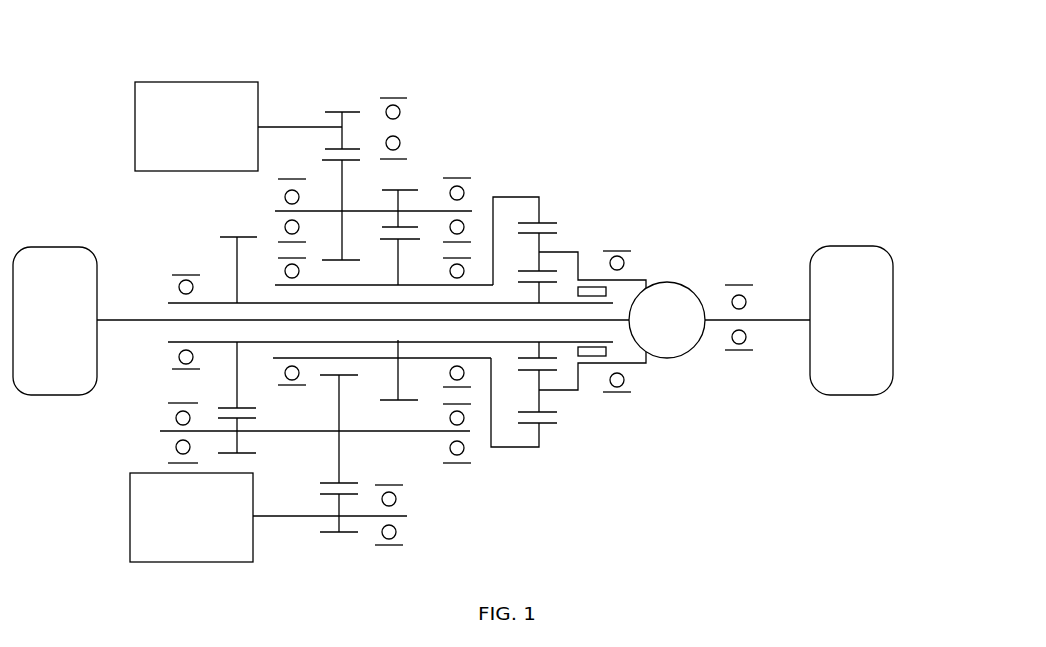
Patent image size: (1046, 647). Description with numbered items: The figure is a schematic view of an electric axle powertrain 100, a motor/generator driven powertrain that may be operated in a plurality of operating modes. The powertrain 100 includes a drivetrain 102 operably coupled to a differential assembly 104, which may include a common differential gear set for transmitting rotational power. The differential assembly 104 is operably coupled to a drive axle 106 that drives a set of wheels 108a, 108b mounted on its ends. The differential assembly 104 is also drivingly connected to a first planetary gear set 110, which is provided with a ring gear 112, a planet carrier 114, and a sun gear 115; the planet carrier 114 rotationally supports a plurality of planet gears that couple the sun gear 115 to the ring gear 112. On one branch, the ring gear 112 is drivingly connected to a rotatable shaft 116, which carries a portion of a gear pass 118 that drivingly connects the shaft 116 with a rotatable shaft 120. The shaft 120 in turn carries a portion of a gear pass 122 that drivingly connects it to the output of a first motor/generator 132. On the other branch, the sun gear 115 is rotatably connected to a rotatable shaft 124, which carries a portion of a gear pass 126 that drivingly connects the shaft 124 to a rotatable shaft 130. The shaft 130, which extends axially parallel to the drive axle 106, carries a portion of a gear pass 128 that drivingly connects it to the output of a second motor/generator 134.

The electric powertrain 100 is at (642, 72).
The drivetrain 102 is at (402, 72).
The differential assembly 104 is at (691, 320).
The drive axle 106 is at (108, 322).
The wheel 108a is at (843, 246).
The wheel 108b is at (50, 247).
The first planetary gear set 110 is at (538, 185).
The ring gear 112 is at (546, 221).
The planet carrier 114 is at (539, 243).
The sun gear 115 is at (548, 353).
The rotatable shaft 116 is at (493, 197).
The gear pass 118 is at (412, 178).
The rotatable shaft 120 is at (357, 210).
The gear pass 122 is at (333, 110).
The rotatable shaft 124 is at (182, 342).
The gear pass 126 is at (257, 453).
The gear pass 128 is at (337, 537).
The rotatable shaft 130 is at (281, 428).
The first motor/generator 132 is at (238, 126).
The second motor/generator 134 is at (268, 517).